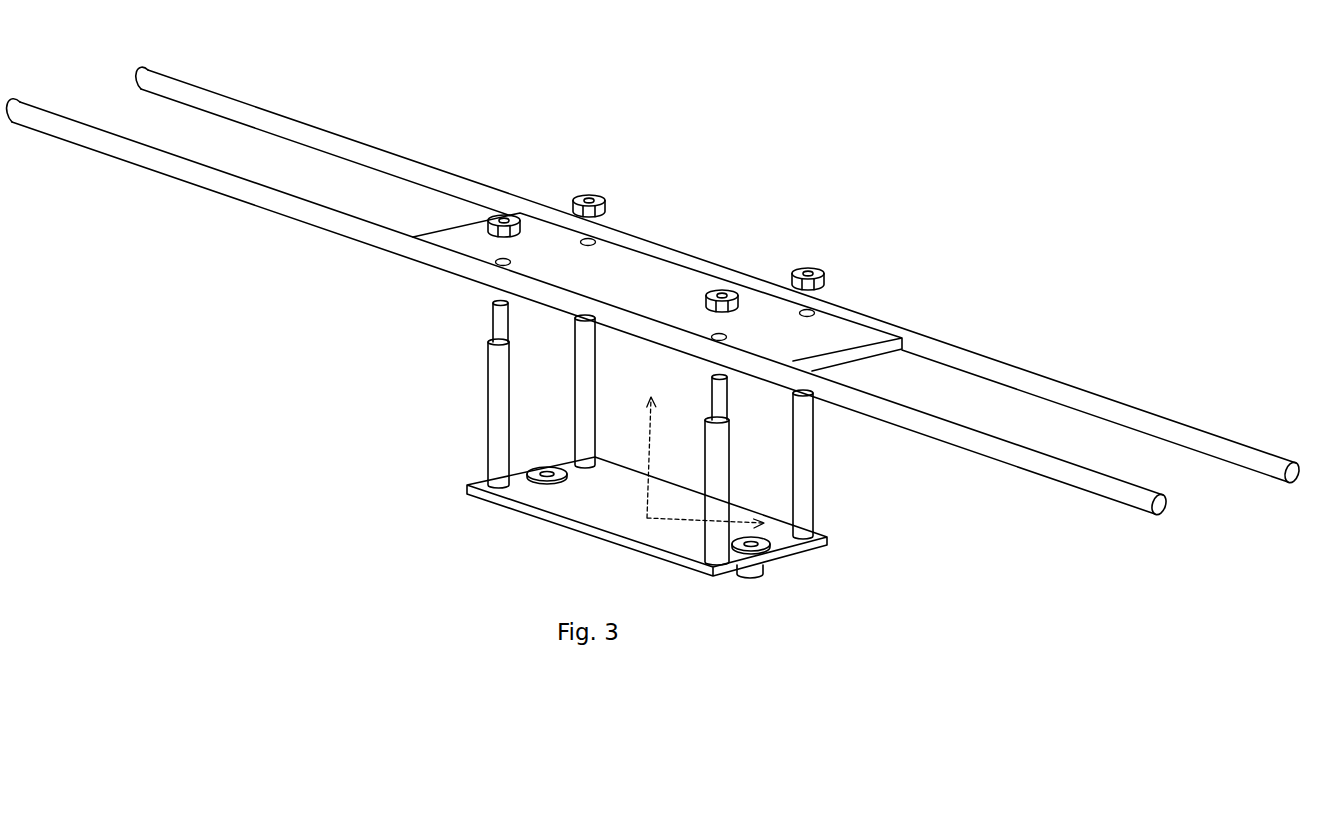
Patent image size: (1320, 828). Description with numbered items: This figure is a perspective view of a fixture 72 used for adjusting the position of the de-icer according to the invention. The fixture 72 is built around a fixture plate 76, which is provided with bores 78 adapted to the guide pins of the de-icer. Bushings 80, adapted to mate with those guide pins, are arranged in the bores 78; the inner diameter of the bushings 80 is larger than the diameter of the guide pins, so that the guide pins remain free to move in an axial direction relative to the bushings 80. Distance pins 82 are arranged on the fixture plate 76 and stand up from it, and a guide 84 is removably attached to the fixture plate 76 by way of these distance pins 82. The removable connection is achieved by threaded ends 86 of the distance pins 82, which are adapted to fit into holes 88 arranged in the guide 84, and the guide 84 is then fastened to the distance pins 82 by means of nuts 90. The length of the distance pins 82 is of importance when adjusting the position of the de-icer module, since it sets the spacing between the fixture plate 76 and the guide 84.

The fixture 72 is at (654, 330).
The fixture plate 76 is at (828, 538).
The bores 78 is at (556, 466).
The bushings 80 is at (763, 568).
The distance pins 82 is at (813, 443).
The guide 84 is at (937, 338).
The threaded ends 86 is at (712, 391).
The holes 88 is at (818, 312).
The nuts 90 is at (818, 273).